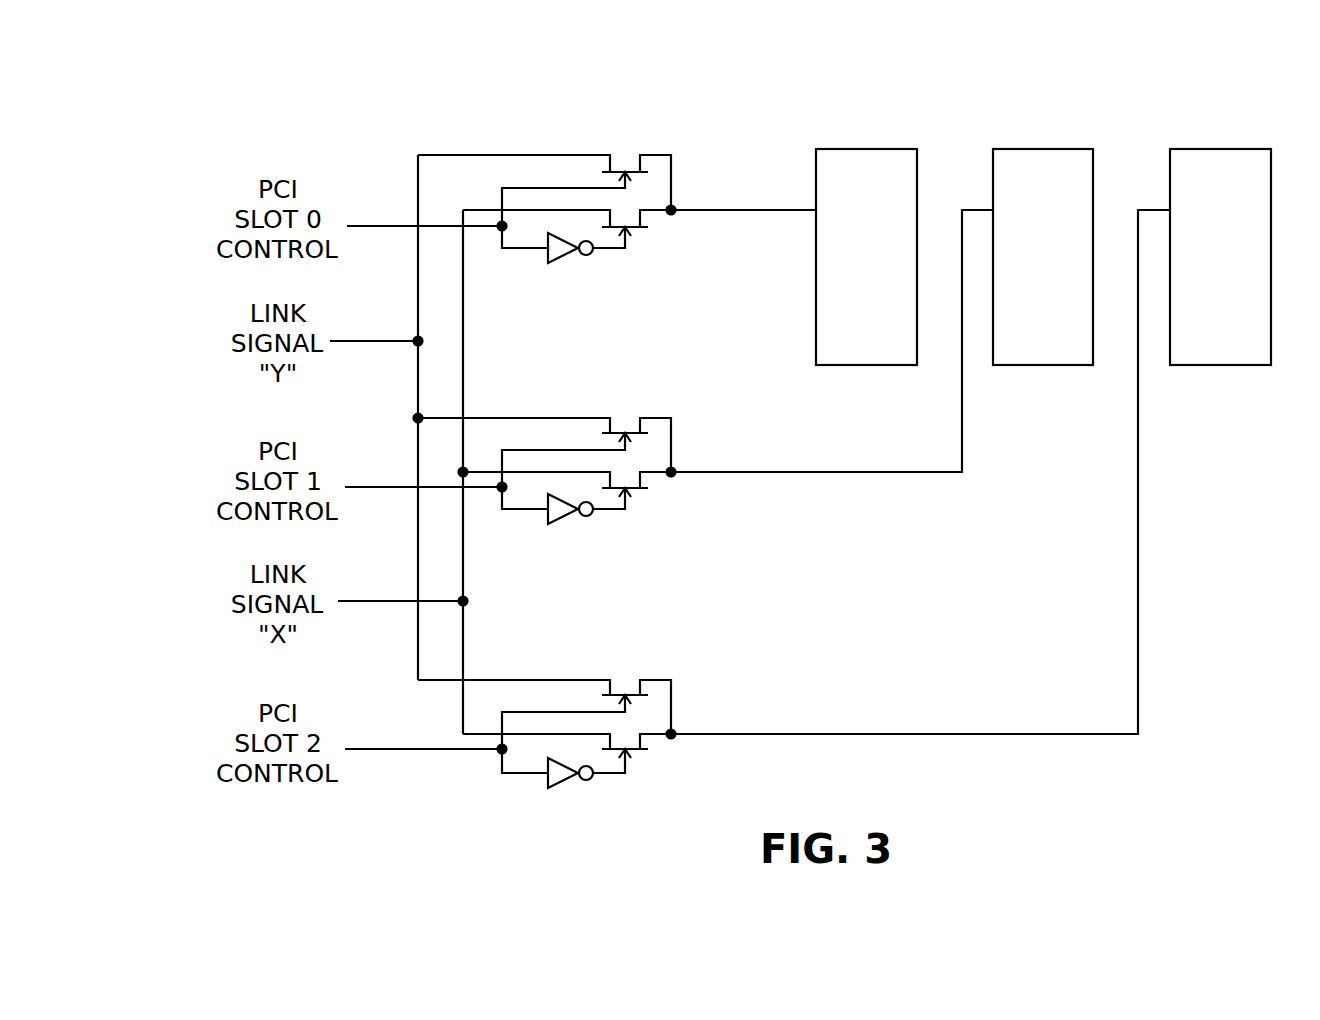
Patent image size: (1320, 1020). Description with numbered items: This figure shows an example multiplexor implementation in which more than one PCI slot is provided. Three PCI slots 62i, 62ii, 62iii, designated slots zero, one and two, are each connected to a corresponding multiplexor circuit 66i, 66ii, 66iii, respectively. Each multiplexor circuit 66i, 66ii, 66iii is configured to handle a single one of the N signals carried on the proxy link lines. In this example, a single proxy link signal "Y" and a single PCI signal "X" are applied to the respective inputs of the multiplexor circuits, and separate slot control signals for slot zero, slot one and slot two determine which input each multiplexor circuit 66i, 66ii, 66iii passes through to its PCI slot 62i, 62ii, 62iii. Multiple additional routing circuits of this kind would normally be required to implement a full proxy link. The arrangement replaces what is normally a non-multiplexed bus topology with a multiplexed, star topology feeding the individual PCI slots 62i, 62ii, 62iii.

The multiplexor circuit 66i is at (640, 138).
The multiplexor circuit 66ii is at (640, 398).
The multiplexor circuit 66iii is at (640, 660).
The PCI slot 62i is at (862, 148).
The PCI slot 62ii is at (1046, 148).
The PCI slot 62iii is at (1224, 148).